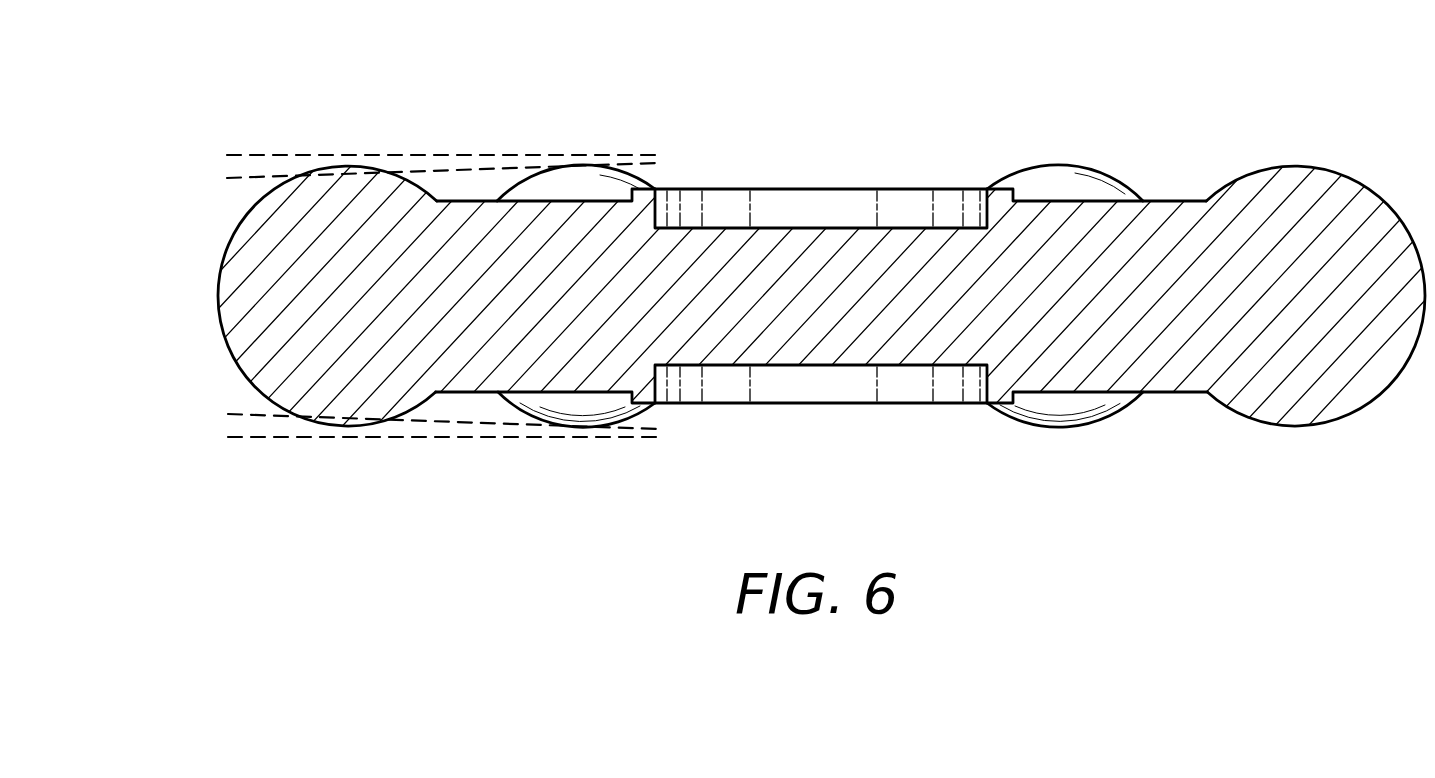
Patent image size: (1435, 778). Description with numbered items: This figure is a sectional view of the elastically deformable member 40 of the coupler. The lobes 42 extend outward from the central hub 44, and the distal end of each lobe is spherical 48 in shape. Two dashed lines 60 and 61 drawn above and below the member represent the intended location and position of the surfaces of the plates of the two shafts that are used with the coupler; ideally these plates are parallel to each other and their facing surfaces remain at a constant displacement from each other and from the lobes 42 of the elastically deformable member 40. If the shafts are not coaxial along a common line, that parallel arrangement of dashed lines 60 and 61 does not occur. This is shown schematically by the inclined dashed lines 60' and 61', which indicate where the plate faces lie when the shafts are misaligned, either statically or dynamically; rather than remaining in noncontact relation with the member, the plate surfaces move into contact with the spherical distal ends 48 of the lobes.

The elastically deformable member 40 is at (1143, 112).
The lobes 42 is at (468, 208).
The hub 44 is at (598, 212).
The spherical distal end 48 is at (278, 197).
The dashed line 60 is at (442, 481).
The dashed line 60' is at (386, 387).
The dashed line 61 is at (442, 111).
The dashed line 61' is at (399, 194).